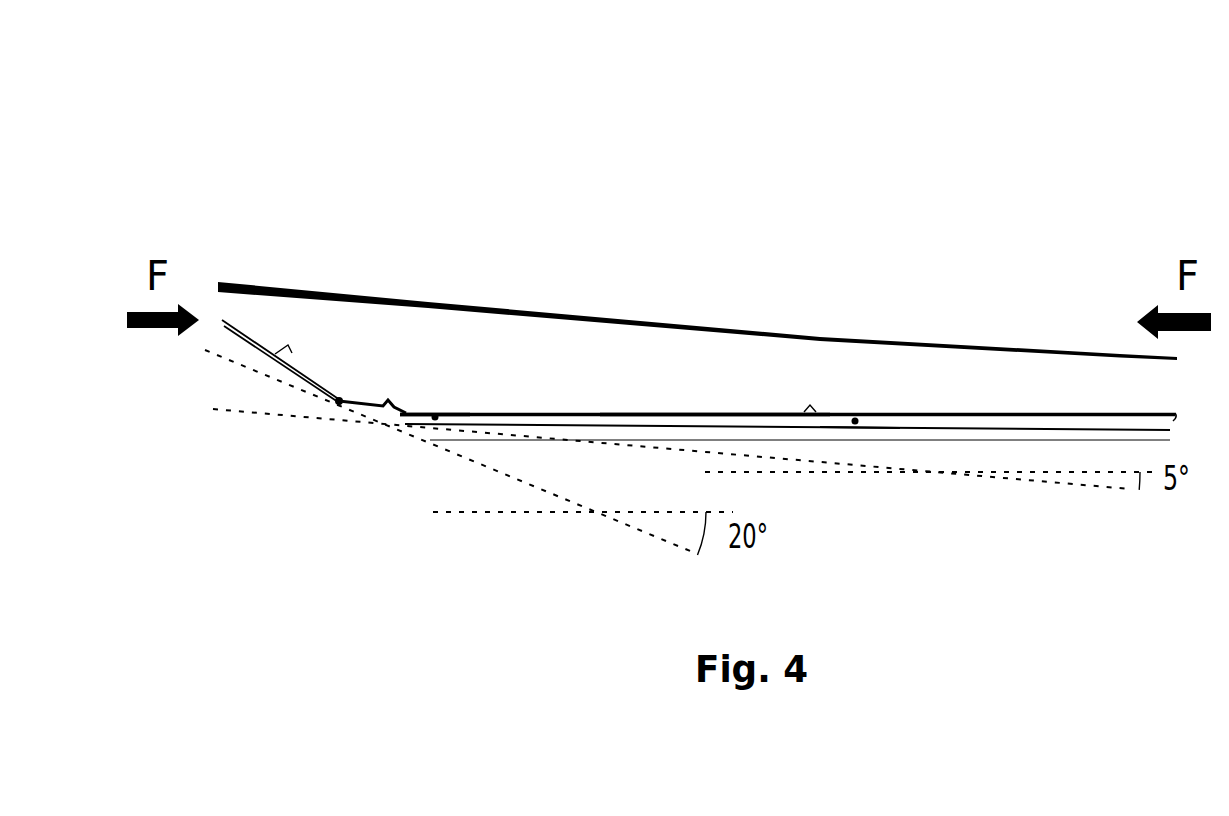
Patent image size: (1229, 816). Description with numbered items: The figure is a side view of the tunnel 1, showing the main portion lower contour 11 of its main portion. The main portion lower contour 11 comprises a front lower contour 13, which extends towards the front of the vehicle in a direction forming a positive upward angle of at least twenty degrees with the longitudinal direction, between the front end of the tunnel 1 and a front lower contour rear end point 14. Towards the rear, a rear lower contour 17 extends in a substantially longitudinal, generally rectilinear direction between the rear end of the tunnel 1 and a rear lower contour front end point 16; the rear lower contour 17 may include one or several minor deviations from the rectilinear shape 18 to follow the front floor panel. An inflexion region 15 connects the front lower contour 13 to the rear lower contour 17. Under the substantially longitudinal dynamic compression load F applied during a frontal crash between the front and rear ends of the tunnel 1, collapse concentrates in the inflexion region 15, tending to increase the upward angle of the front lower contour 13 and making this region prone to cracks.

The tunnel 1 is at (766, 256).
The main portion lower contour 11 is at (570, 425).
The front lower contour 13 is at (268, 343).
The front lower contour rear end point 14 is at (338, 399).
The inflexion region 15 is at (410, 412).
The rear lower contour front end point 16 is at (435, 417).
The rear lower contour 17 is at (713, 412).
The minor deviation from the rectilinear shape 18 is at (855, 419).